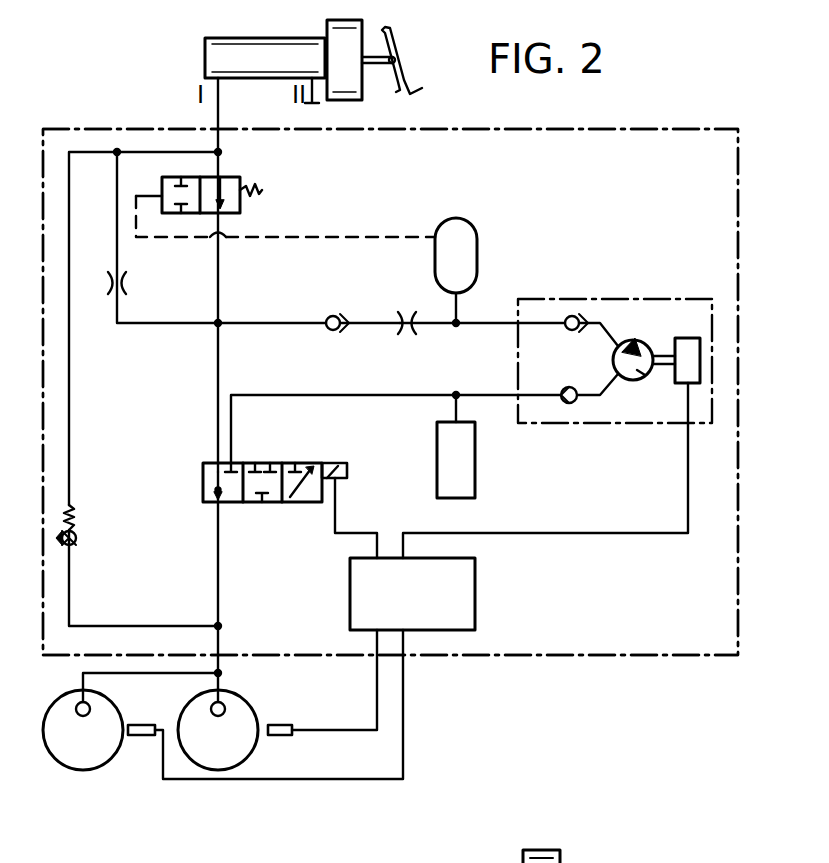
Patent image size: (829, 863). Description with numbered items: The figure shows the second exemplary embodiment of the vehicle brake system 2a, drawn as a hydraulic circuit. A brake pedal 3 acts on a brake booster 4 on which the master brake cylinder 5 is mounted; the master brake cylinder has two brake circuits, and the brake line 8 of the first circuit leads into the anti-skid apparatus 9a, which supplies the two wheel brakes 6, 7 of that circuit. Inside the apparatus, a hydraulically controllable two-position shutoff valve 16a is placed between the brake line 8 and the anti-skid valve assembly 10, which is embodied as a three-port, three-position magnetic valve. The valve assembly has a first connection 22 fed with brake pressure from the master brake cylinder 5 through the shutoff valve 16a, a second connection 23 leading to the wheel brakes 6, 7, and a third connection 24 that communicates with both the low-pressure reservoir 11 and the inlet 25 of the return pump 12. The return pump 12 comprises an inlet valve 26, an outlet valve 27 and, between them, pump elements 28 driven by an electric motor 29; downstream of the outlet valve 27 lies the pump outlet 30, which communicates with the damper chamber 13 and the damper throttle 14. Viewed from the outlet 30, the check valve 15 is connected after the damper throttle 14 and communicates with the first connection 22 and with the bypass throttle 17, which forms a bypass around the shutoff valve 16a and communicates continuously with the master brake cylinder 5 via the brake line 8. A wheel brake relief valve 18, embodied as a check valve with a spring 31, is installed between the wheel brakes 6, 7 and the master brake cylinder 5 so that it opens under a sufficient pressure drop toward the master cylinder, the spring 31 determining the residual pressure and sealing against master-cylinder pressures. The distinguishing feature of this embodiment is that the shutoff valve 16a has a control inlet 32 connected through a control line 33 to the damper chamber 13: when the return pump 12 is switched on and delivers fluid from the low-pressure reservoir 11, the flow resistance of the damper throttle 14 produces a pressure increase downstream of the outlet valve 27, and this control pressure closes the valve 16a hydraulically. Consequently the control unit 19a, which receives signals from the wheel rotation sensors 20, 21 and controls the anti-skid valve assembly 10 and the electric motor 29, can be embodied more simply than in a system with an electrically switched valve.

The vehicle brake system 2a is at (666, 118).
The brake pedal 3 is at (411, 82).
The brake booster 4 is at (352, 100).
The master brake cylinder 5 is at (265, 58).
The wheel brake 6 is at (226, 700).
The wheel brake 7 is at (95, 702).
The brake line 8 is at (218, 96).
The anti-skid apparatus 9a is at (606, 128).
The anti-skid valve assembly 10 is at (290, 463).
The low-pressure reservoir 11 is at (466, 462).
The return pump 12 is at (621, 299).
The damper chamber 13 is at (473, 230).
The damper throttle 14 is at (408, 317).
The check valve 15 is at (329, 320).
The hydraulically controllable 2/2-way valve 16a is at (241, 180).
The bypass throttle 17 is at (127, 283).
The wheel brake relief valve 18 is at (72, 546).
The control unit 19a is at (476, 590).
The wheel rotation sensor 20 is at (282, 736).
The wheel rotation sensor 21 is at (142, 738).
The first connection 22 is at (210, 463).
The second connection 23 is at (214, 504).
The third connection 24 is at (233, 463).
The inlet 25 is at (518, 396).
The inlet valve 26 is at (570, 388).
The outlet valve 27 is at (567, 329).
The pump elements 28 is at (638, 383).
The electric motor 29 is at (688, 338).
The outlet 30 is at (514, 322).
The spring 31 is at (74, 517).
The control inlet 32 is at (160, 180).
The control line 33 is at (274, 239).